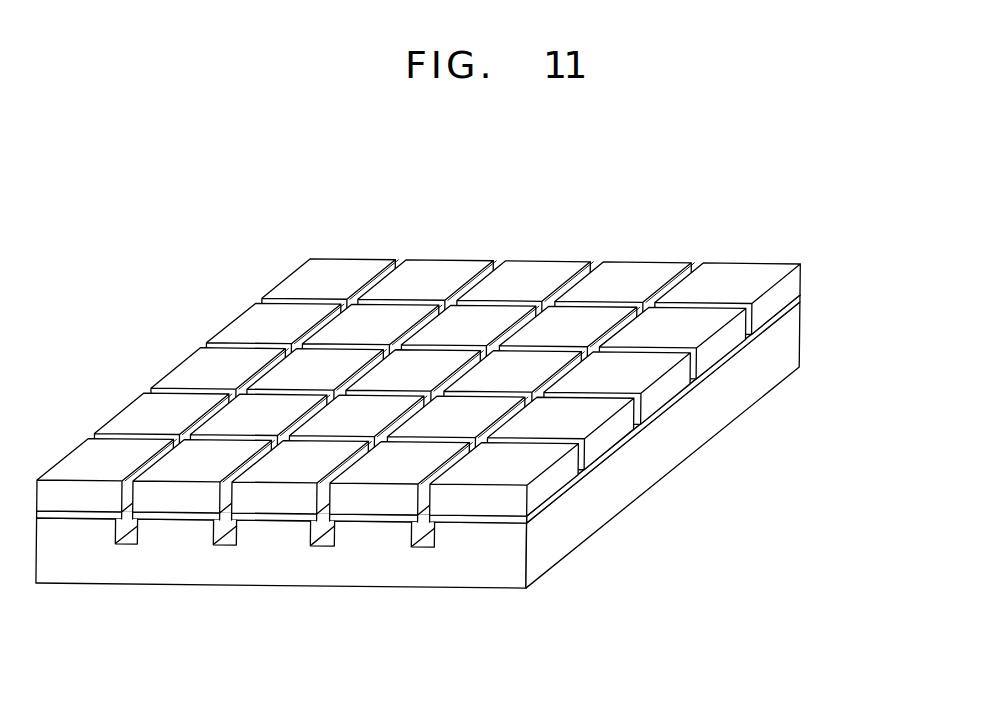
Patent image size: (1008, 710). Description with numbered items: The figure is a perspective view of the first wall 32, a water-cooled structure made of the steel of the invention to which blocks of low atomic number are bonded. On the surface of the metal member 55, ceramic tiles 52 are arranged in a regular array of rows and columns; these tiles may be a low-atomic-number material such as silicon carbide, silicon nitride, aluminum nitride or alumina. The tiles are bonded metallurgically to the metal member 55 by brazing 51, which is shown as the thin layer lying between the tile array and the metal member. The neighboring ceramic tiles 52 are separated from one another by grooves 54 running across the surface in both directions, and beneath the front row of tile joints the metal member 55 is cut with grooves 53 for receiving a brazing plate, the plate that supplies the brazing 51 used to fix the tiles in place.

The first wall 32 is at (461, 415).
The brazing 51 is at (798, 300).
The ceramic tiles 52 is at (788, 286).
The grooves for receiving a brazing plate 53 is at (408, 532).
The grooves 54 is at (692, 262).
The metal member 55 is at (197, 560).